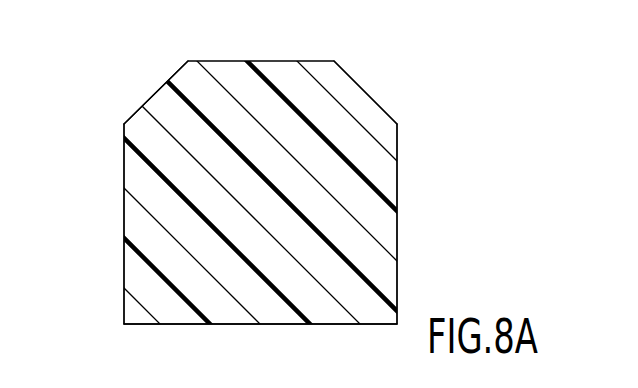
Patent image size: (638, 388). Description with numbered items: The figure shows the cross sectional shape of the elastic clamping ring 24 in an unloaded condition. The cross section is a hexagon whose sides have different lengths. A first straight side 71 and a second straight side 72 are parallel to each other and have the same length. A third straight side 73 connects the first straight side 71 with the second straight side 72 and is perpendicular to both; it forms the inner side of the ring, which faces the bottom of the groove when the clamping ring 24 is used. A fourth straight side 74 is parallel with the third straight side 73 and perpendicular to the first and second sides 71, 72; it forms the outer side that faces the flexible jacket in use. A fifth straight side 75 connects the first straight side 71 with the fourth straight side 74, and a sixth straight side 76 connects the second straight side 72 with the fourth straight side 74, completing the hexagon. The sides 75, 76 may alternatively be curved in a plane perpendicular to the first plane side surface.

The elastic clamping ring 24 is at (430, 277).
The first straight side 71 is at (124, 184).
The second straight side 72 is at (397, 193).
The third straight side 73 is at (285, 325).
The fourth straight side 74 is at (253, 60).
The fifth straight side 75 is at (155, 93).
The sixth straight side 76 is at (366, 92).